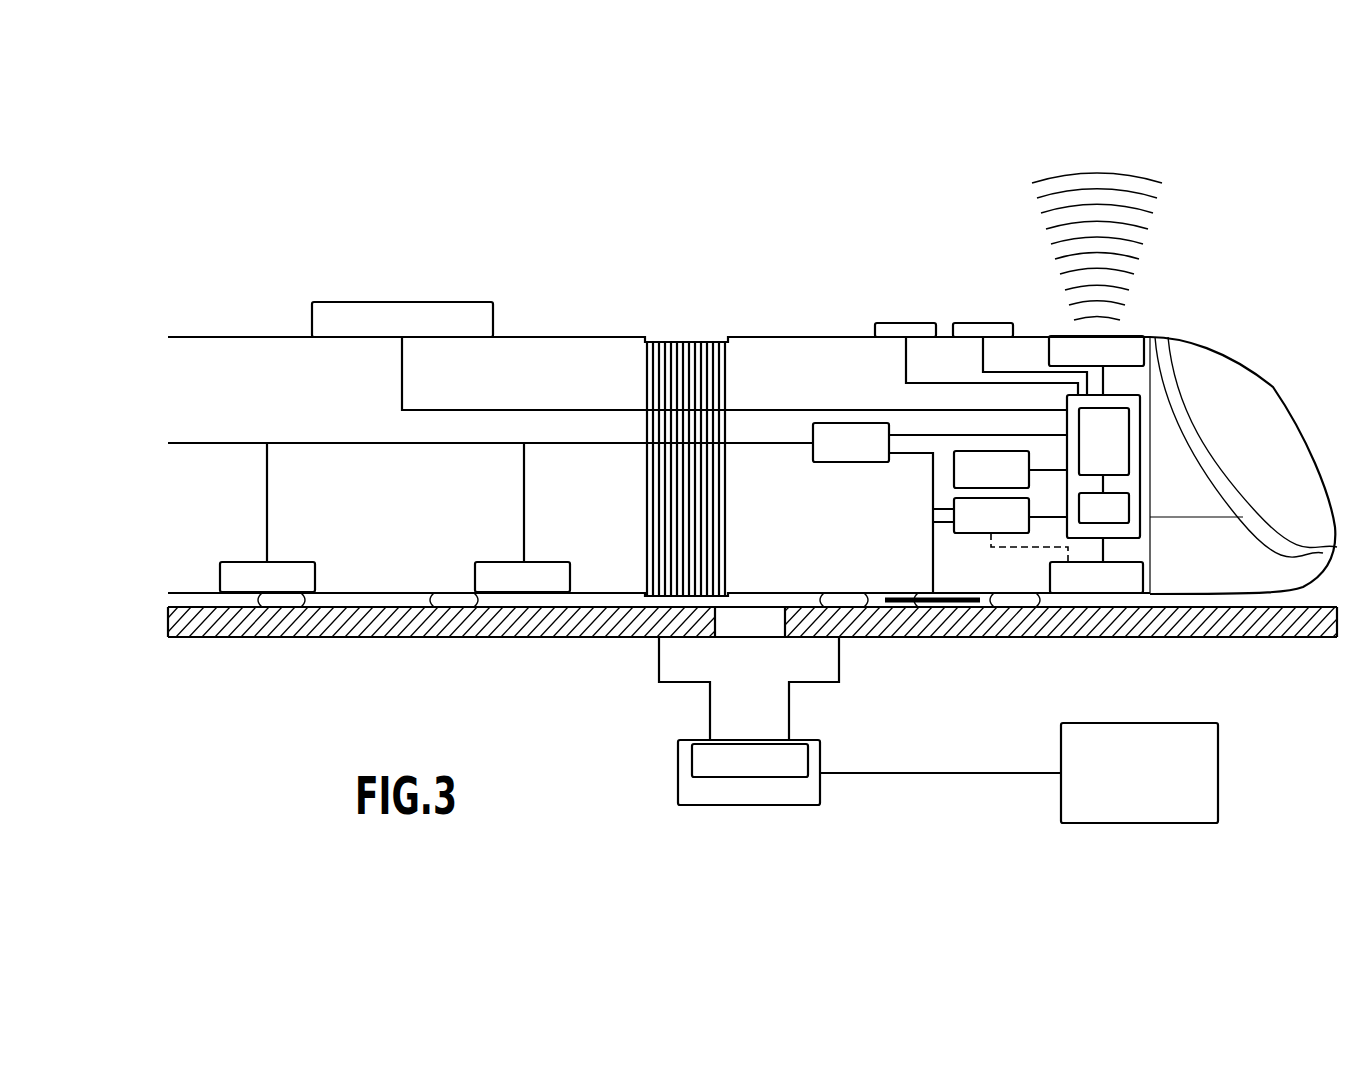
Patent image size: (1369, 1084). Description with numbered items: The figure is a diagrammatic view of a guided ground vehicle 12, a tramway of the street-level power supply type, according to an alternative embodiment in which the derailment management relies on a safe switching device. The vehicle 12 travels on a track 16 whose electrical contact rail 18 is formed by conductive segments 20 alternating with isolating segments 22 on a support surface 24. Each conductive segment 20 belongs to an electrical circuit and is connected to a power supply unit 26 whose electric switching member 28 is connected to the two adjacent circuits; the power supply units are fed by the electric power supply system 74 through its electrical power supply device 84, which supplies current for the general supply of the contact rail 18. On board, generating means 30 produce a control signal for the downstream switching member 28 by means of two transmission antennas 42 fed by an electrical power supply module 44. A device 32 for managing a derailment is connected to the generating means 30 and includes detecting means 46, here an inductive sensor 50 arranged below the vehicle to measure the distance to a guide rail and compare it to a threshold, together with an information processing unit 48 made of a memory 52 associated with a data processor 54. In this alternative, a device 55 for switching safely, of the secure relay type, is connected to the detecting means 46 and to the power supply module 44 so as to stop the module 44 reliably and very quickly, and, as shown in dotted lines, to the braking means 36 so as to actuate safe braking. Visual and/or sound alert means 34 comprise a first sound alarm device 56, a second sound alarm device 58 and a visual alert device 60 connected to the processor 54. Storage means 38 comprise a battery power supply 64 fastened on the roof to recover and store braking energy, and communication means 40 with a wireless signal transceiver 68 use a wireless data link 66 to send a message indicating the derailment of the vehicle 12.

The guided ground vehicle 12 is at (338, 280).
The track 16 is at (122, 621).
The electrical contact rail 18 is at (160, 617).
The conductive segment 20 is at (510, 625).
The isolating segment 22 is at (754, 622).
The support surface 24 is at (355, 637).
The power supply unit 26 is at (678, 770).
The electric switching member 28 is at (750, 760).
The generating means 30 is at (805, 457).
The device for managing a derailment 32 is at (918, 510).
The visual and/or sound alert means 34 is at (945, 457).
The braking means 36 is at (1137, 573).
The storage means 38 is at (285, 312).
The communication means 40 is at (1148, 322).
The antenna 42 is at (395, 577).
The electrical power supply module 44 is at (940, 442).
The detecting means 46 is at (885, 588).
The information processing unit 48 is at (1140, 438).
The inductive sensor 50 is at (915, 592).
The memory 52 is at (1104, 527).
The data processor 54 is at (1103, 466).
The device for switching safely 55 is at (1011, 530).
The first sound alarm device 56 is at (1010, 469).
The second sound alarm device 58 is at (903, 323).
The visual alert device 60 is at (983, 323).
The battery power supply 64 is at (689, 356).
The data link 66 is at (1143, 172).
The wireless signal transceiver 68 is at (1096, 365).
The electric power supply system 74 is at (1245, 768).
The electrical power supply device 84 is at (1120, 808).